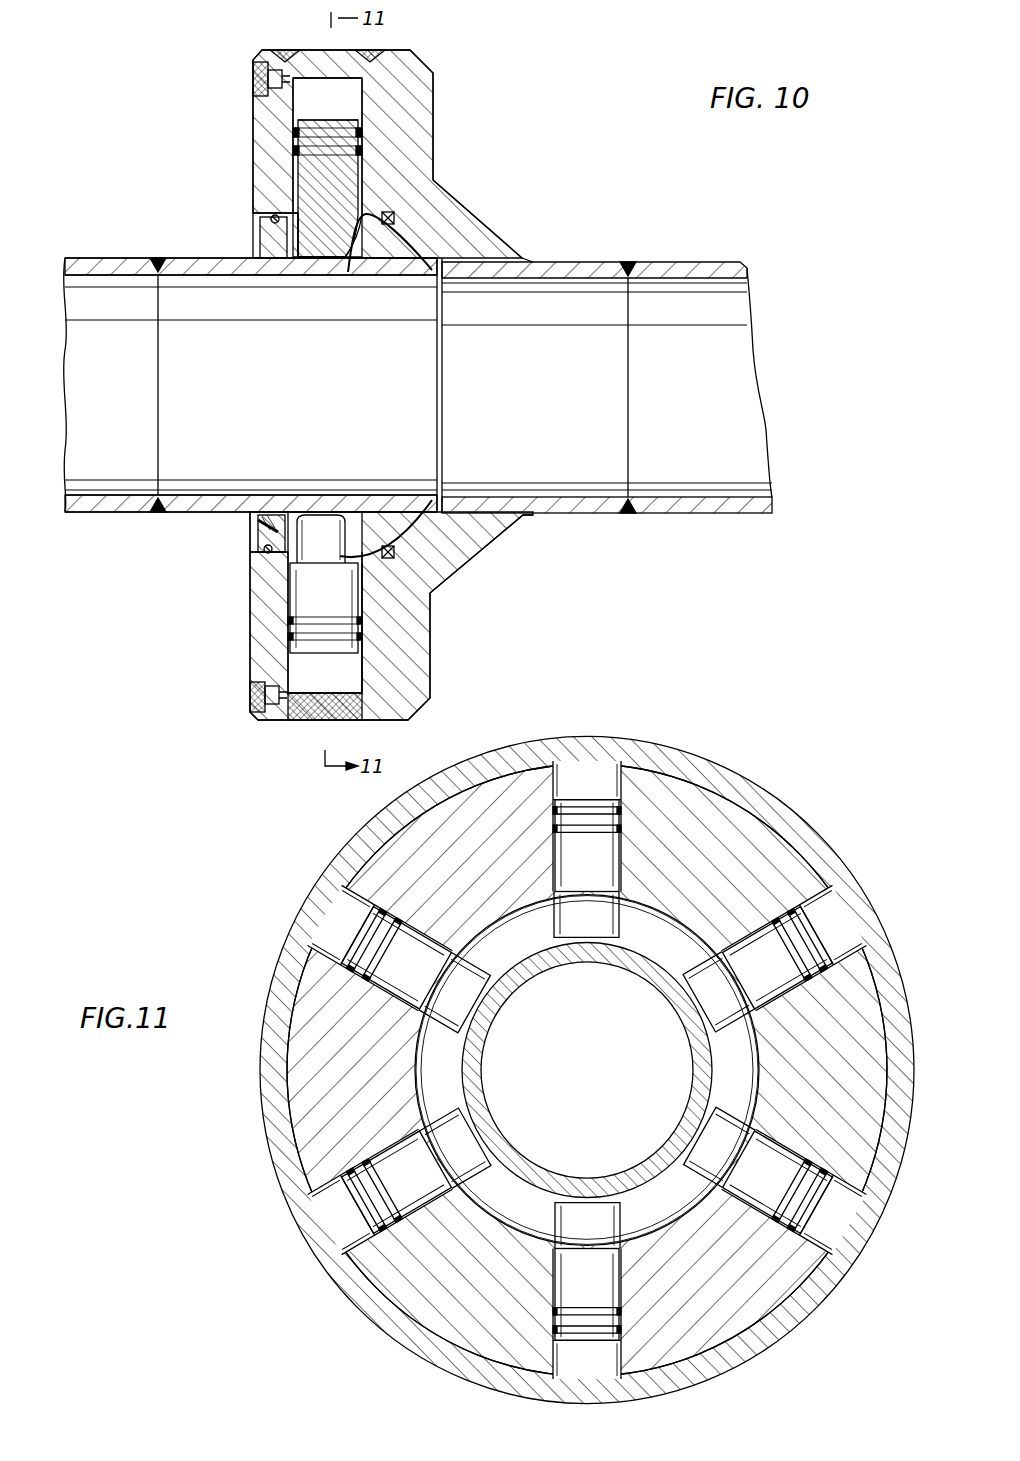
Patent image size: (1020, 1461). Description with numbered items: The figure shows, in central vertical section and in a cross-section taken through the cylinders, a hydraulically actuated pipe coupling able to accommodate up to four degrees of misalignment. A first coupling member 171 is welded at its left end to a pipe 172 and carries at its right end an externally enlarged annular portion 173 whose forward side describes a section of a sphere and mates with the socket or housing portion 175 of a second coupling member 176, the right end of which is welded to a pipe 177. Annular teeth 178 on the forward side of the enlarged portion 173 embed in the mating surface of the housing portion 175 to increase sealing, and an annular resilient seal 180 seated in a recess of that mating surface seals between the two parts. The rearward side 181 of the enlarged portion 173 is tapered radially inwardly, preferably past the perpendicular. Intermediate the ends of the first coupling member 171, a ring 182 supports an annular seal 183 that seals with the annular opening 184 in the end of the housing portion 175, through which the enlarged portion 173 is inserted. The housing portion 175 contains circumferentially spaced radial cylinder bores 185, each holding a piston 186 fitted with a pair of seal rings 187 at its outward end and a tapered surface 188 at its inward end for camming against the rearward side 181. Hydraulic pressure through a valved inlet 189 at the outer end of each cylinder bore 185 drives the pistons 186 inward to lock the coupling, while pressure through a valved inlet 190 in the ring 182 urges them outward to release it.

In FIG. 10, the first coupling member 171 is at (177, 514).
In FIG. 11, the first coupling member 171 is at (587, 1070).
In FIG. 10, the pipe 172 is at (85, 515).
In FIG. 10, the enlarged annular portion 173 is at (367, 508).
In FIG. 11, the enlarged annular portion 173 is at (587, 1070).
In FIG. 10, the housing portion 175 is at (460, 550).
In FIG. 11, the housing portion 175 is at (587, 1069).
In FIG. 10, the coupling member 176 is at (575, 513).
In FIG. 10, the pipe 177 is at (722, 518).
In FIG. 10, the annular teeth 178 is at (398, 232).
In FIG. 10, the annular resilient seal 180 is at (423, 208).
In FIG. 10, the rearward side 181 is at (340, 270).
In FIG. 10, the ring 182 is at (263, 240).
In FIG. 10, the annular seal 183 is at (273, 216).
In FIG. 10, the annular opening 184 is at (257, 553).
In FIG. 10, the cylinder bores 185 is at (363, 98).
In FIG. 11, the cylinder bores 185 is at (552, 1033).
In FIG. 10, the piston 186 is at (313, 142).
In FIG. 11, the piston 186 is at (572, 1035).
In FIG. 10, the seal rings 187 is at (363, 153).
In FIG. 10, the tapered surface 188 is at (375, 255).
In FIG. 10, the valved inlet 189 is at (253, 68).
In FIG. 10, the valved inlet 190 is at (260, 527).